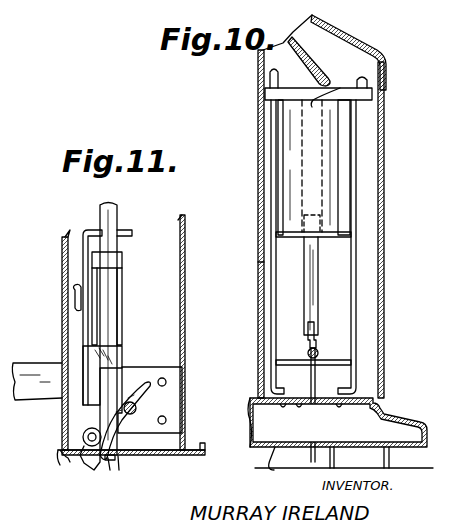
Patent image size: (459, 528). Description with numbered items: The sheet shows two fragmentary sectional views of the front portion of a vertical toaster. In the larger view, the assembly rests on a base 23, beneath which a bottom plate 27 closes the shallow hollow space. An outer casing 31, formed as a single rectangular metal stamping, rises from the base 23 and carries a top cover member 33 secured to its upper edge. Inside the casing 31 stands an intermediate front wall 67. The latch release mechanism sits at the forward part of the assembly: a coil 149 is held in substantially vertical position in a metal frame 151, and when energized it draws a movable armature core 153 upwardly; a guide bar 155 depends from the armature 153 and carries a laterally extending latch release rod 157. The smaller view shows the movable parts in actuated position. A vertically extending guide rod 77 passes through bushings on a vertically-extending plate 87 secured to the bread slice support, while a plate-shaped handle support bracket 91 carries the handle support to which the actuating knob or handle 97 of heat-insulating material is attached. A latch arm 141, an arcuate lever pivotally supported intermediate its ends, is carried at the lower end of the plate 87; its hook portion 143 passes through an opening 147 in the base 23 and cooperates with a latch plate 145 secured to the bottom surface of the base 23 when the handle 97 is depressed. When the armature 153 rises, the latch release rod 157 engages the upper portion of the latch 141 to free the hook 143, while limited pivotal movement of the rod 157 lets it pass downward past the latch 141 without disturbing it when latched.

In FIG. 10, the base 23 is at (398, 413).
In FIG. 11, the base 23 is at (166, 455).
In FIG. 10, the bottom plate 27 is at (282, 465).
In FIG. 10, the outer casing 31 is at (384, 140).
In FIG. 11, the outer casing 31 is at (62, 300).
In FIG. 10, the top cover member 33 is at (362, 46).
In FIG. 10, the intermediate front wall 67 is at (258, 262).
In FIG. 11, the intermediate front wall 67 is at (185, 320).
In FIG. 11, the guide rod 77 is at (108, 305).
In FIG. 11, the vertically-extending plate 87 is at (122, 288).
In FIG. 11, the handle support bracket 91 is at (86, 230).
In FIG. 11, the actuating knob or handle 97 is at (40, 370).
In FIG. 11, the latch arm 141 is at (120, 392).
In FIG. 11, the hook portion 143 is at (94, 466).
In FIG. 11, the latch plate 145 is at (85, 448).
In FIG. 11, the opening 147 is at (118, 458).
In FIG. 10, the coil 149 is at (340, 180).
In FIG. 10, the metal frame 151 is at (356, 258).
In FIG. 10, the movable armature core 153 is at (318, 300).
In FIG. 10, the guide bar 155 is at (322, 380).
In FIG. 10, the latch release rod 157 is at (322, 348).
In FIG. 11, the latch release rod 157 is at (137, 409).